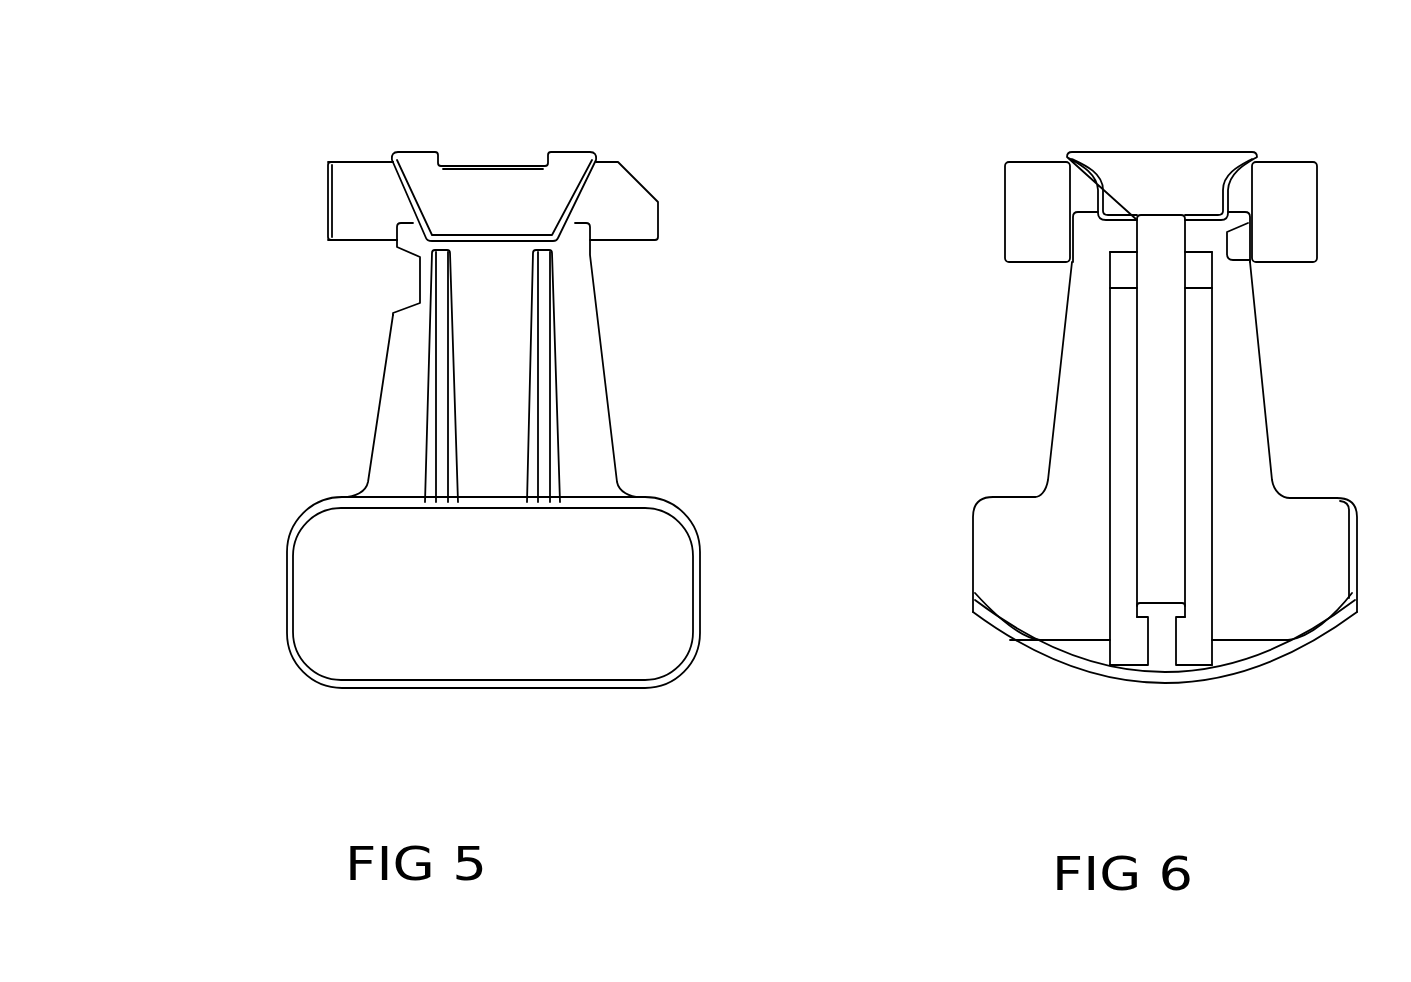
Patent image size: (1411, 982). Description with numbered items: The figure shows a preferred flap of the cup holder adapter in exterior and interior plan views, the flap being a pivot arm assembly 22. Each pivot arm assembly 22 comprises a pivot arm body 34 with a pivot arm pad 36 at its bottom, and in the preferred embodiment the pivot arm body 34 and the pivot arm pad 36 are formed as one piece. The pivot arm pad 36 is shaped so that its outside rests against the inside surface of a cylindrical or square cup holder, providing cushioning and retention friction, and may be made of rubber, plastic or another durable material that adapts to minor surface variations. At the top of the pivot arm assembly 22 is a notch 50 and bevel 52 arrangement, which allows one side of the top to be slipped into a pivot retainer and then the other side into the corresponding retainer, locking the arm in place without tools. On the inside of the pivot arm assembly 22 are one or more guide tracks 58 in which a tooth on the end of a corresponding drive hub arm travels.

In FIG. 5, the pivot arm assembly 22 is at (415, 135).
In FIG. 6, the pivot arm assembly 22 is at (1163, 138).
In FIG. 5, the bevel 52 is at (640, 180).
In FIG. 6, the bevel 52 is at (1017, 165).
In FIG. 5, the notch 50 is at (420, 280).
In FIG. 6, the notch 50 is at (1227, 243).
In FIG. 5, the pivot arm body 34 is at (583, 415).
In FIG. 6, the pivot arm body 34 is at (1066, 445).
In FIG. 5, the pivot arm pad 36 is at (600, 617).
In FIG. 6, the pivot arm pad 36 is at (1070, 678).
In FIG. 6, the guide track 58 is at (1130, 647).